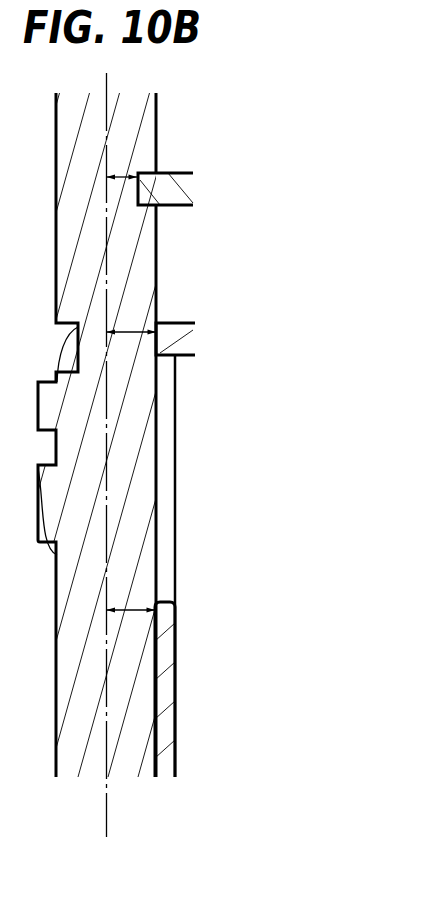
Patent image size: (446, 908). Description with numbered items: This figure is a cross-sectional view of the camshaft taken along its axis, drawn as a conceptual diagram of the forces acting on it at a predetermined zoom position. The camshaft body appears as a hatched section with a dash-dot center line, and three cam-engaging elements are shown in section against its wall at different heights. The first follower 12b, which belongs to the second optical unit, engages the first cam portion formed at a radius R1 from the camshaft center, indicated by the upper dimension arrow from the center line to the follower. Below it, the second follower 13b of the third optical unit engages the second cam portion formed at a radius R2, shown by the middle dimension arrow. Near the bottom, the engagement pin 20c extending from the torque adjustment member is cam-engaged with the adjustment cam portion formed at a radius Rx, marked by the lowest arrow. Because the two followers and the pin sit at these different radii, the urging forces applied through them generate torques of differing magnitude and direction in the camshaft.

The first follower 12b is at (179, 193).
The second follower 13b is at (173, 335).
The engagement pin 20c is at (163, 628).
The radius R1 is at (112, 176).
The radius R2 is at (130, 330).
The radius Rx is at (132, 606).